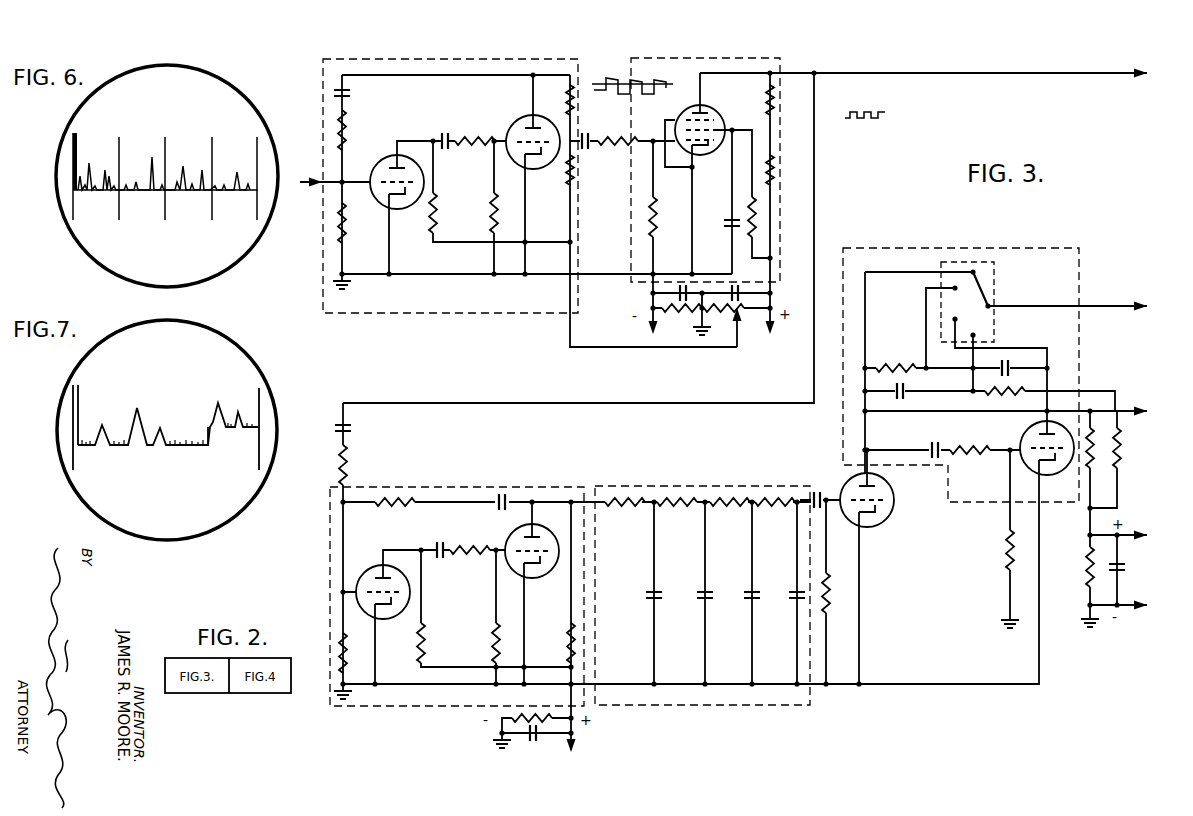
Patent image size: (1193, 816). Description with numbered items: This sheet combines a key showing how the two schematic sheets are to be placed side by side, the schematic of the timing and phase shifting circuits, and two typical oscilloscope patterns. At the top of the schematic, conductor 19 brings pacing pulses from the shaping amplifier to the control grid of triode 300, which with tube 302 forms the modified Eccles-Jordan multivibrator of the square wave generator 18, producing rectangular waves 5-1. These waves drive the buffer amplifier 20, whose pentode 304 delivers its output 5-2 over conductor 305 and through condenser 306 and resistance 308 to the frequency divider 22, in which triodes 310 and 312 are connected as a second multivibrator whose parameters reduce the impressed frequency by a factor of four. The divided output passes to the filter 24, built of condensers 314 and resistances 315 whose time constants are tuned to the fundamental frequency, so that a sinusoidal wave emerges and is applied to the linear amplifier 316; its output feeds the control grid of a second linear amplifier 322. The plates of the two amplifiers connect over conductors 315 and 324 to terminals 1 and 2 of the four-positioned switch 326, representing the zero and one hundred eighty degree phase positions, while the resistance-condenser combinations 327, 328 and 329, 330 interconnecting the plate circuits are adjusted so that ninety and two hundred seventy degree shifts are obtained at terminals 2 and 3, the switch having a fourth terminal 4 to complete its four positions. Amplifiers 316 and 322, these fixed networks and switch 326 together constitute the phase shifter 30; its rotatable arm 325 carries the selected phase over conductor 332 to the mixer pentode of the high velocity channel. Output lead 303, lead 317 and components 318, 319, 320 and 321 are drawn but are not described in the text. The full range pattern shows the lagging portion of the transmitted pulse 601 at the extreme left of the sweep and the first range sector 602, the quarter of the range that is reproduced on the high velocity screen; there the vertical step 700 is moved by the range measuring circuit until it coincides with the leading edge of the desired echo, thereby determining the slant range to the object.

In FIG. 3, the square wave generator 18 is at (455, 58).
In FIG. 3, the conductor 19 is at (328, 179).
In FIG. 3, the buffer amplifier 20 is at (708, 57).
In FIG. 3, the rectangular waves 5-1 is at (641, 141).
In FIG. 3, the rectangular pulses 5-2 is at (814, 132).
In FIG. 3, the triode 300 is at (385, 163).
In FIG. 3, the vacuum tube 302 is at (520, 120).
In FIG. 3, the buffer amplifier pentode 304 is at (719, 113).
In FIG. 3, the output lead 303 is at (1067, 75).
In FIG. 3, the conductor 305 is at (815, 188).
In FIG. 3, the condenser 306 is at (352, 425).
In FIG. 3, the resistance 308 is at (350, 470).
In FIG. 3, the frequency divider 22 is at (470, 487).
In FIG. 3, the triode 310 is at (388, 568).
In FIG. 3, the triode 312 is at (516, 532).
In FIG. 3, the filter 24 is at (720, 488).
In FIG. 3, the condensers 314 is at (795, 601).
In FIG. 3, the resistances 315 is at (674, 502).
In FIG. 3, the linear amplifier 316 is at (845, 484).
In FIG. 3, the capacitor 318 is at (928, 445).
In FIG. 3, the resistor 320 is at (990, 445).
In FIG. 3, the linear amplifier 322 is at (1031, 428).
In FIG. 3, the phase shifter 30 is at (968, 248).
In FIG. 3, the four-positioned switch 326 is at (998, 273).
In FIG. 3, the rotatable arm 325 is at (992, 298).
In FIG. 3, the switch terminal 1 is at (977, 273).
In FIG. 3, the switch terminal 2 is at (960, 288).
In FIG. 3, the switch terminal 3 is at (960, 319).
In FIG. 3, the switch terminal 4 is at (978, 333).
In FIG. 3, the conductor 319 is at (926, 307).
In FIG. 3, the conductor 321 is at (972, 359).
In FIG. 3, the conductor 324 is at (1009, 350).
In FIG. 3, the resistance 327 is at (901, 360).
In FIG. 3, the condenser 328 is at (1010, 366).
In FIG. 3, the resistance 329 is at (905, 389).
In FIG. 3, the condenser 330 is at (995, 396).
In FIG. 3, the conductor 332 is at (1098, 307).
In FIG. 3, the output lead 317 is at (1120, 413).
In FIG. 6, the transmitted pulse 601 is at (78, 140).
In FIG. 7, the transmitted pulse 601 is at (79, 398).
In FIG. 6, the first sector 602 is at (119, 220).
In FIG. 7, the first sector 602 is at (73, 470).
In FIG. 7, the vertical step 700 is at (208, 427).